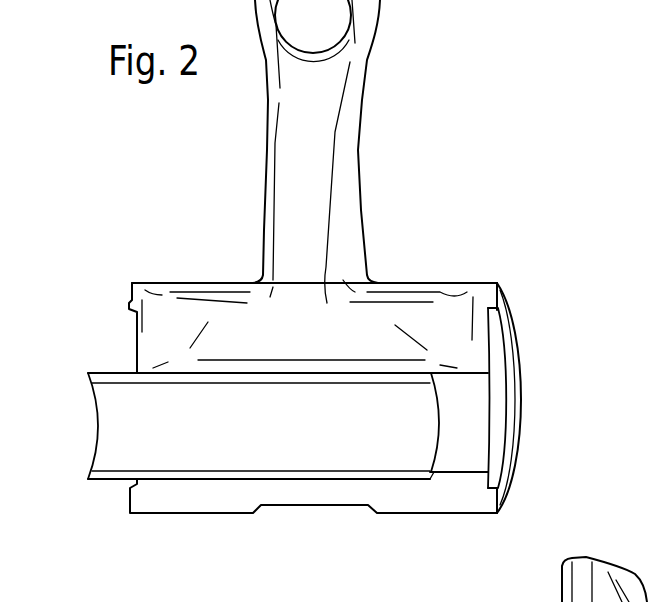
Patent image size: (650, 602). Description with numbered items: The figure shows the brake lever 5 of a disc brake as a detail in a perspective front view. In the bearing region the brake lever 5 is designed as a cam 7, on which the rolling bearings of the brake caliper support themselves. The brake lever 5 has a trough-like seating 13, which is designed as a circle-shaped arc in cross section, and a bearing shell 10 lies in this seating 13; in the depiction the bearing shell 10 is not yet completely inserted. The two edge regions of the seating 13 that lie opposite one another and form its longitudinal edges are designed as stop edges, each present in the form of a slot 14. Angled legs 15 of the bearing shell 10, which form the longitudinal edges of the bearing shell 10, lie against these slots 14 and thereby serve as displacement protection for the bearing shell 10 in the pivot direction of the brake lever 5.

The brake lever 5 is at (405, 80).
The cam 7 is at (145, 287).
The bearing shell 10 is at (110, 428).
The seating 13 is at (468, 418).
The slot 14 is at (487, 373).
The angled legs 15 is at (98, 370).